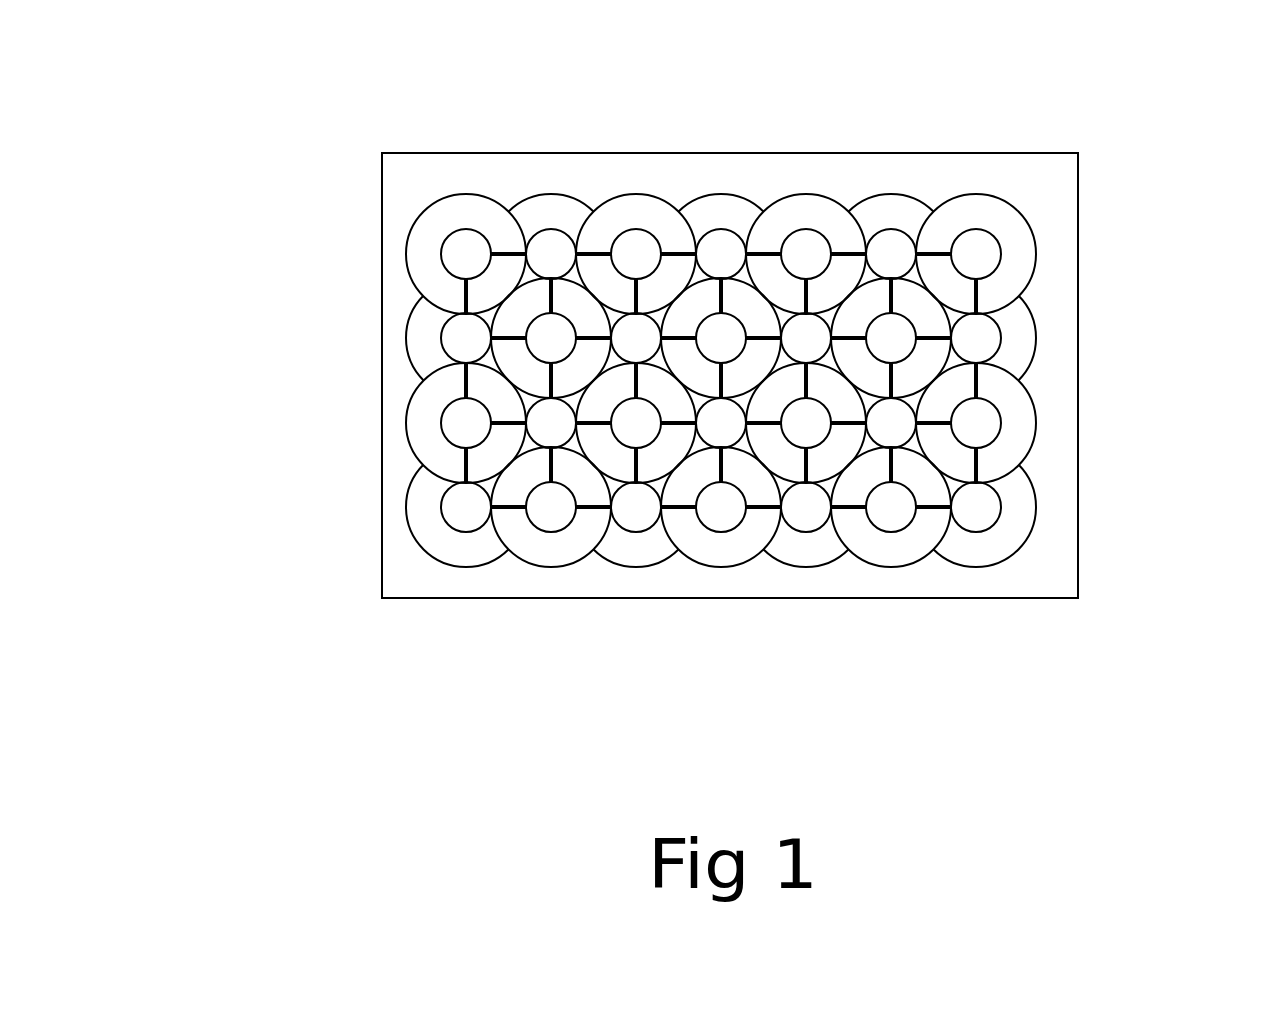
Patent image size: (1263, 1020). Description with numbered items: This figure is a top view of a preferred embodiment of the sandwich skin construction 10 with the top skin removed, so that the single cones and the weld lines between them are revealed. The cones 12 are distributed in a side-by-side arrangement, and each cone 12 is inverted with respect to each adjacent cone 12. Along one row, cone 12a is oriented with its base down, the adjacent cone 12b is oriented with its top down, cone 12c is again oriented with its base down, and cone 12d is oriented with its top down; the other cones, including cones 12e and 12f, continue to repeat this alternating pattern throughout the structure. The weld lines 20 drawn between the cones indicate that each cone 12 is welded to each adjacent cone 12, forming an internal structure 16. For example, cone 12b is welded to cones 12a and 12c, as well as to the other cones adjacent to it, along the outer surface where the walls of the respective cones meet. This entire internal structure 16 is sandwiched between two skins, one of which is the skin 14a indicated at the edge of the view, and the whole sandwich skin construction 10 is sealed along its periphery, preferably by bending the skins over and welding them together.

The sandwich skin construction 10 is at (1122, 298).
The cone 12 is at (417, 257).
The cone 12a is at (427, 397).
The cone 12b is at (603, 438).
The cone 12c is at (600, 441).
The cone 12d is at (713, 427).
The cone 12e is at (832, 455).
The cone 12f is at (902, 418).
The skin 14a is at (380, 213).
The internal structure 16 is at (1057, 417).
The weld lines 20 is at (508, 413).